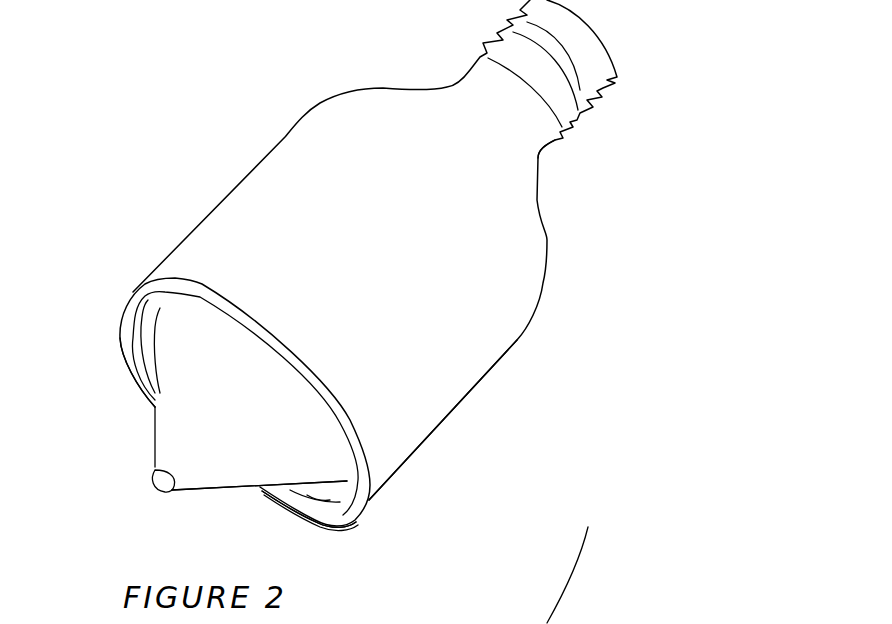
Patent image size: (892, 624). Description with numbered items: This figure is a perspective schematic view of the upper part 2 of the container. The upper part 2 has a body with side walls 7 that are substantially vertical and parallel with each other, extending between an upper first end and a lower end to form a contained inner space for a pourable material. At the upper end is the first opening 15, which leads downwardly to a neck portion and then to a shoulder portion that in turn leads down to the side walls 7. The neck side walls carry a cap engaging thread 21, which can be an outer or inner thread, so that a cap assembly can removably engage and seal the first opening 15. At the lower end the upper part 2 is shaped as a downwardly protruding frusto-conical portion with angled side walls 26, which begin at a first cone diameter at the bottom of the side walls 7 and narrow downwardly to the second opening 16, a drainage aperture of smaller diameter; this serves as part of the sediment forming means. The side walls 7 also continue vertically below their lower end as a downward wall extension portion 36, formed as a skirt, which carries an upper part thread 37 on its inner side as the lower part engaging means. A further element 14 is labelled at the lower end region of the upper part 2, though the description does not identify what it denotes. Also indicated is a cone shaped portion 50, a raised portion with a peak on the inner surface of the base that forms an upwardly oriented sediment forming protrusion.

The upper part 2 is at (562, 297).
The side walls 7 is at (425, 372).
The cap 14 is at (195, 297).
The first opening 15 is at (608, 38).
The second opening 16 is at (155, 485).
The thread 21 is at (597, 107).
The angled side walls 26 is at (247, 463).
The downward wall extension portion 36 is at (118, 343).
The upper part thread 37 is at (342, 520).
The cone shaped portion 50 is at (584, 561).